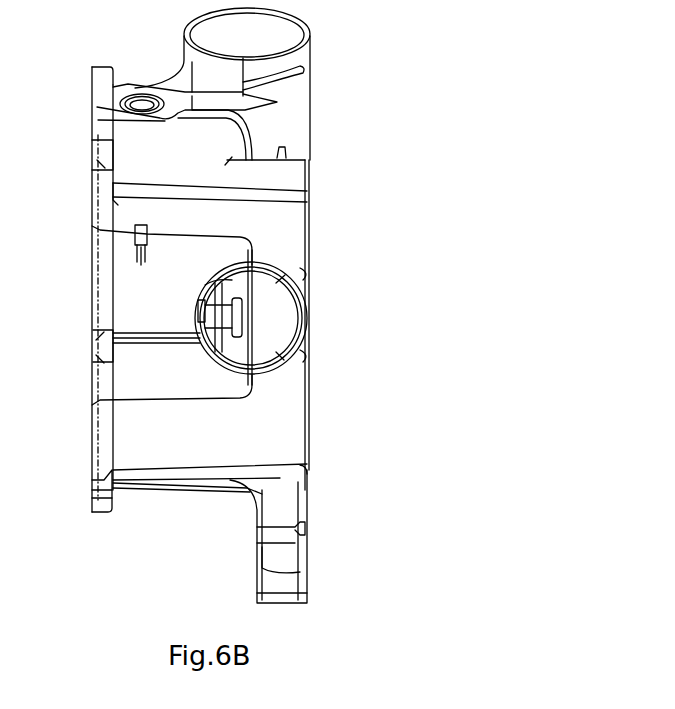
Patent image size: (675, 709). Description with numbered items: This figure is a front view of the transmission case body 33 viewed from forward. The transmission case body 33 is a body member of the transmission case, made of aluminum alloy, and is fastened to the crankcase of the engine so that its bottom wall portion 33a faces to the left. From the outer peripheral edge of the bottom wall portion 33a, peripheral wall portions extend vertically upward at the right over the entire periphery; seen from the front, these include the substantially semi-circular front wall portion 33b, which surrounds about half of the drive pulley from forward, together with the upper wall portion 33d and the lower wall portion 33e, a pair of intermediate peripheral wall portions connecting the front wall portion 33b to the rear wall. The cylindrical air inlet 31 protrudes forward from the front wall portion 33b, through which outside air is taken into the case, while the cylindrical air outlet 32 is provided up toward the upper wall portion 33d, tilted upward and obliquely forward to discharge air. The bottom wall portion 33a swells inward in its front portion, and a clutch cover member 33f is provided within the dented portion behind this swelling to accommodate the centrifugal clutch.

The cylindrical air inlet 31 is at (283, 290).
The cylindrical air outlet 32 is at (308, 26).
The transmission case body 33 is at (311, 156).
The bottom wall portion 33a is at (308, 398).
The front wall portion 33b is at (130, 438).
The upper wall portion 33d is at (142, 92).
The lower wall portion 33e is at (147, 488).
The clutch cover member 33f is at (250, 318).